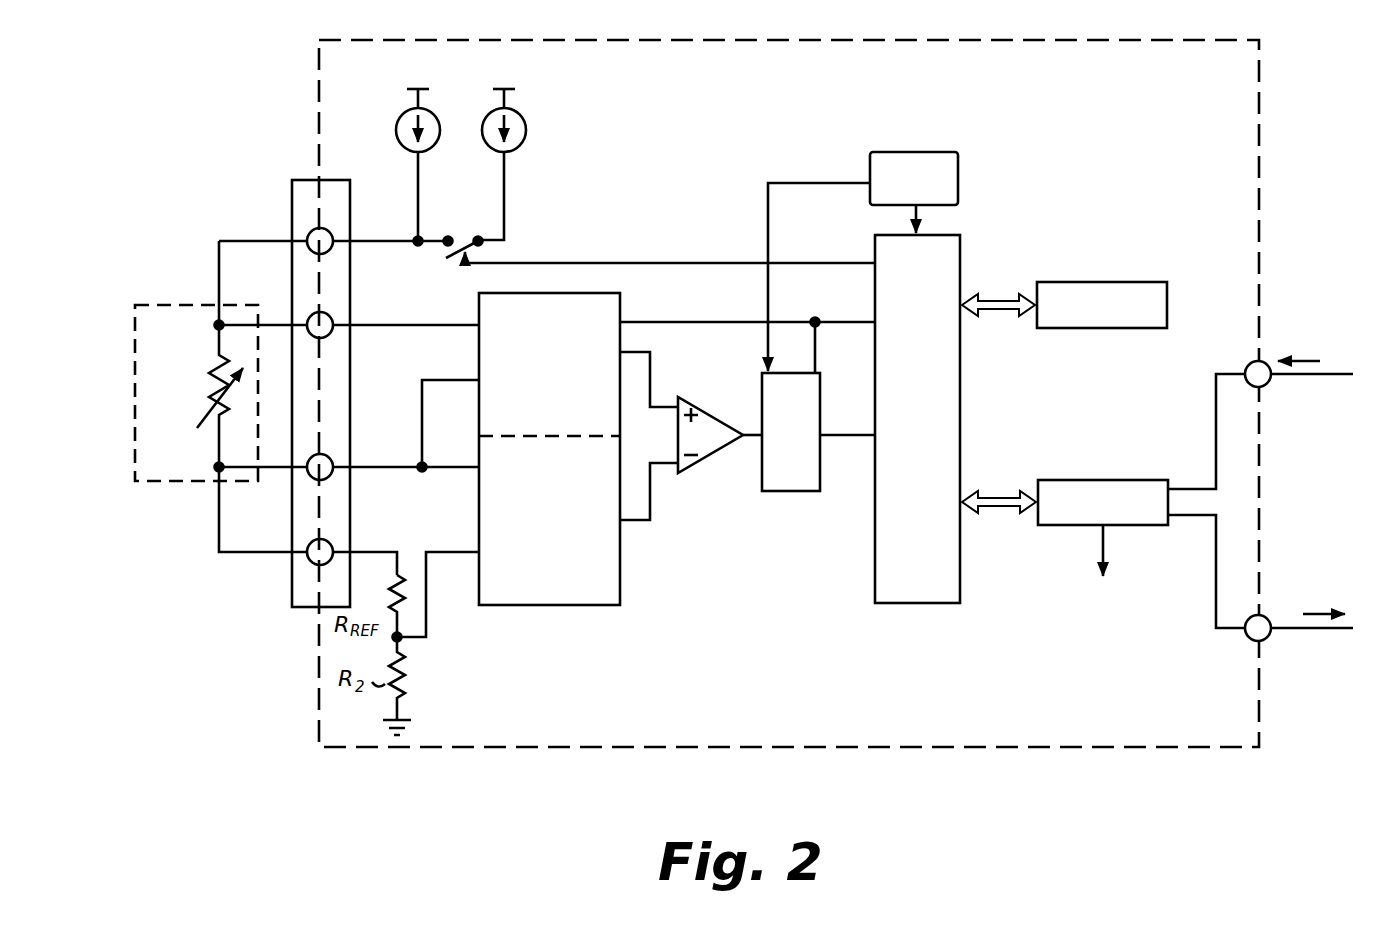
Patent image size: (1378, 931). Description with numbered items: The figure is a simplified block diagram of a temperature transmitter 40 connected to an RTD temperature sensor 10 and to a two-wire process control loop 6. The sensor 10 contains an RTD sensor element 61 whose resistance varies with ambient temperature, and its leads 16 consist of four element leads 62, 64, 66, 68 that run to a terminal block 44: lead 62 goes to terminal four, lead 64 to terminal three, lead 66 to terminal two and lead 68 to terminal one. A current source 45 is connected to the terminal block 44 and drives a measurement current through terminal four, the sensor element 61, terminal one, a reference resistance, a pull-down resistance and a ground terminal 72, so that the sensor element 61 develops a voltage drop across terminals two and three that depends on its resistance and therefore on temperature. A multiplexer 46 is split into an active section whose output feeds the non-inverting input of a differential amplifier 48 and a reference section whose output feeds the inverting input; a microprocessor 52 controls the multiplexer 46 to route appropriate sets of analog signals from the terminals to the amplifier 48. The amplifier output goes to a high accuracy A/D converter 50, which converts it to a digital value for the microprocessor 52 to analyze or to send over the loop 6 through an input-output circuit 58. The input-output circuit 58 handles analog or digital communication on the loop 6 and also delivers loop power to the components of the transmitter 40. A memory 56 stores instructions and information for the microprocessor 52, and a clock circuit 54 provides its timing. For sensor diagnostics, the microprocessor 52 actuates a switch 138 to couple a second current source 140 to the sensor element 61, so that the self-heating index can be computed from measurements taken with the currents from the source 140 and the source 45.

The process control loop 6 is at (1305, 378).
The RTD temperature sensor 10 is at (263, 364).
The leads 16 is at (239, 396).
The temperature transmitter 40 is at (1264, 203).
The terminal block 44 is at (334, 181).
The current source 45 is at (398, 117).
The multiplexer 46 is at (478, 351).
The differential amplifier 48 is at (726, 396).
The A/D converter 50 is at (822, 390).
The microprocessor 52 is at (942, 235).
The clock circuit 54 is at (928, 152).
The memory 56 is at (1080, 282).
The input-output circuit 58 is at (1076, 480).
The RTD sensor element 61 is at (233, 397).
The lead 62 is at (238, 240).
The lead 64 is at (272, 326).
The lead 66 is at (274, 472).
The lead 68 is at (238, 554).
The ground terminal 72 is at (406, 722).
The switch 138 is at (464, 236).
The current source 140 is at (489, 116).